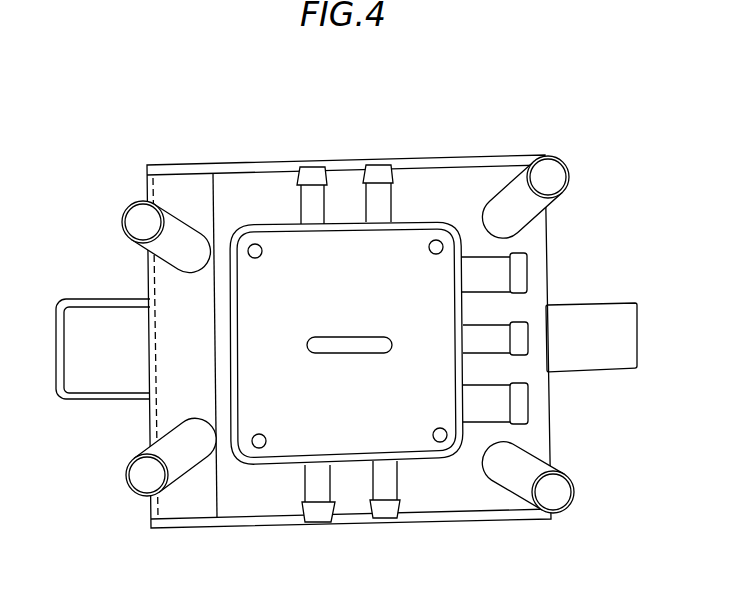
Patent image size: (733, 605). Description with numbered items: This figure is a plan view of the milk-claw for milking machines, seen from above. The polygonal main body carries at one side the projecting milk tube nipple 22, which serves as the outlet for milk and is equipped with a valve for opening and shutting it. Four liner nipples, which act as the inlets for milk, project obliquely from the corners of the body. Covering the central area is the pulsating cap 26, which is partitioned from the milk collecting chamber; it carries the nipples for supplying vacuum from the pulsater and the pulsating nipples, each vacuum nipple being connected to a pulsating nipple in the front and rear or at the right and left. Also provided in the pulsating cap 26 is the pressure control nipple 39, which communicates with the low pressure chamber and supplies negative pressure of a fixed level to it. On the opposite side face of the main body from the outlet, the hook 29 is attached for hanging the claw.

The milk tube nipple 22 is at (633, 327).
The pulsating cap 26 is at (280, 225).
The hook 29 is at (62, 402).
The pressure control nipple 39 is at (523, 333).